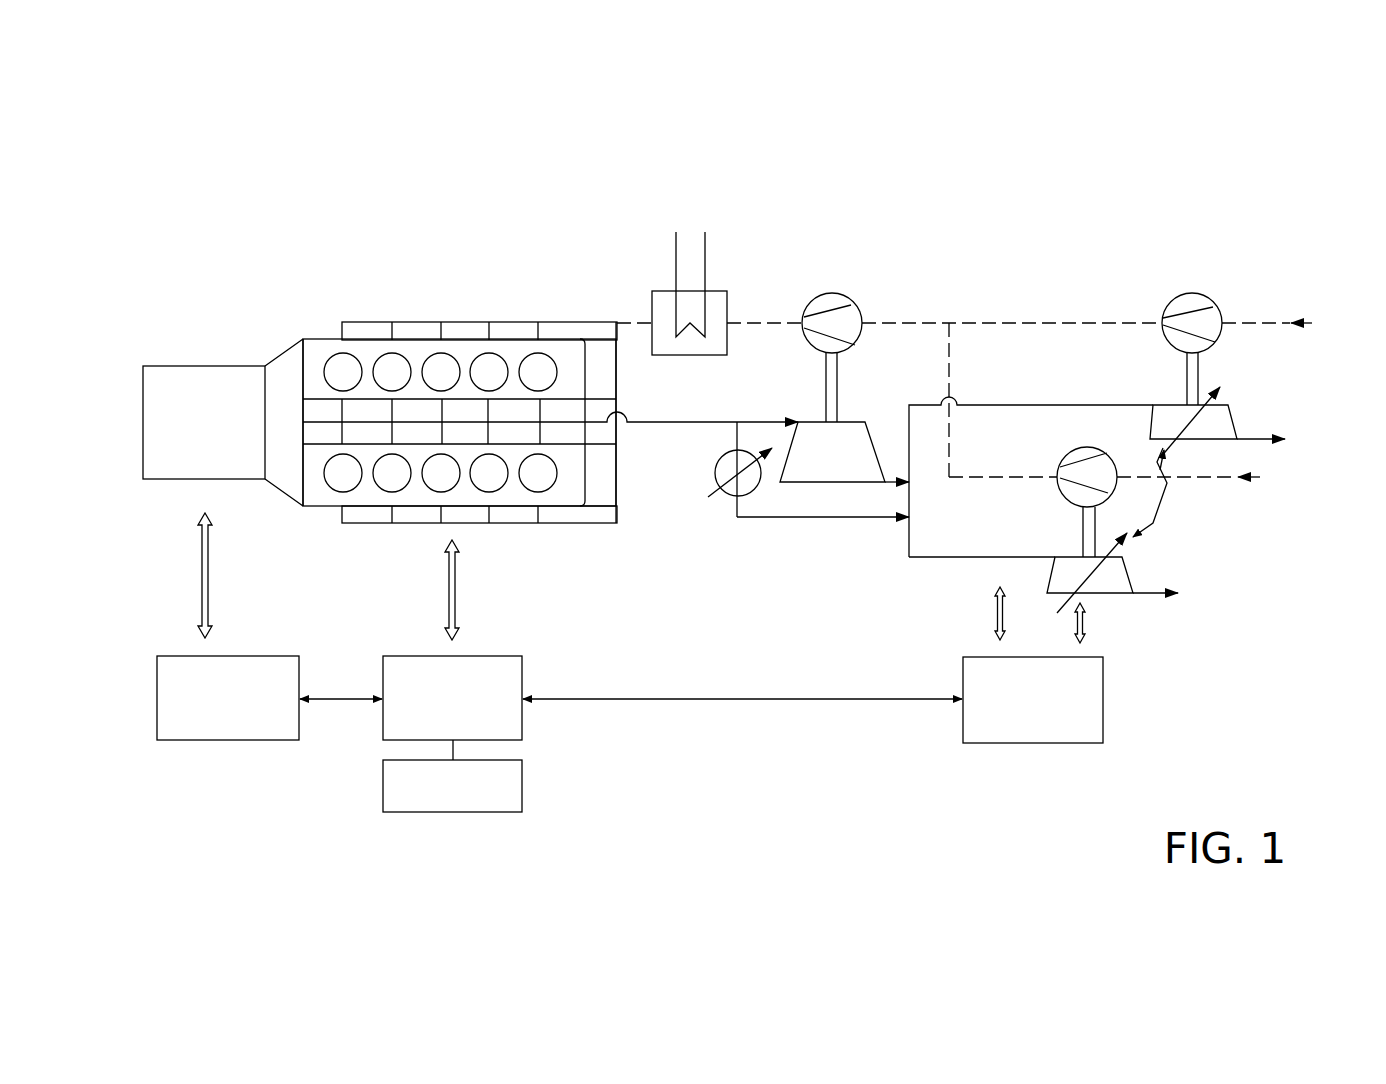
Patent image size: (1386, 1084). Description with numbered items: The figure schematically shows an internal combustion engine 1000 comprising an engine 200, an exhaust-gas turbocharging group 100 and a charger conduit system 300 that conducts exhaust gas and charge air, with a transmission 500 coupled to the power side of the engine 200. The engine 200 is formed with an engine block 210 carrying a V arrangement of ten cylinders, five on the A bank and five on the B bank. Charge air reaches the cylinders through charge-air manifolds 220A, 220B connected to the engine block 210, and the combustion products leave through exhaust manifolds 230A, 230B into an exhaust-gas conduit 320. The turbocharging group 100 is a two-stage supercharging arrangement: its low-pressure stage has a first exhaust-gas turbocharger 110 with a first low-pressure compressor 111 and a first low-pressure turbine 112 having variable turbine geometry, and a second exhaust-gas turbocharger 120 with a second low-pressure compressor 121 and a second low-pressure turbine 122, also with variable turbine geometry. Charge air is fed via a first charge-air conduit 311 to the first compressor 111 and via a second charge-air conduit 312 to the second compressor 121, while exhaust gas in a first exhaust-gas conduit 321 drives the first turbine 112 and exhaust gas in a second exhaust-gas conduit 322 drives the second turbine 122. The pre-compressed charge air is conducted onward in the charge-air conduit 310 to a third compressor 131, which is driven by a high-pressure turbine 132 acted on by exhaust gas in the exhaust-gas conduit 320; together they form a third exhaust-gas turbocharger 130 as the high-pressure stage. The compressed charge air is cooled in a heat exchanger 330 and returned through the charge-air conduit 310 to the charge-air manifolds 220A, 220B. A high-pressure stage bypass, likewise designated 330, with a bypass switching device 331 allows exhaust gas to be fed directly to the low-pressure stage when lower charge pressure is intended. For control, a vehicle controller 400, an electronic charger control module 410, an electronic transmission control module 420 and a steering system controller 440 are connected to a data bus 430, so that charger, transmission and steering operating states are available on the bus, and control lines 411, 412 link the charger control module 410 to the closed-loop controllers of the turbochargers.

The internal combustion engine 1000 is at (1230, 185).
The exhaust-gas turbocharging group 100 is at (1150, 424).
The first exhaust-gas turbocharger 110 is at (1222, 335).
The first low-pressure compressor 111 is at (1178, 298).
The first low-pressure turbine 112 is at (1155, 405).
The second exhaust-gas turbocharger 120 is at (1109, 539).
The second low-pressure compressor 121 is at (1060, 463).
The second low-pressure turbine 122 is at (1063, 573).
The third exhaust-gas turbocharger 130 is at (813, 357).
The third compressor 131 is at (840, 293).
The high-pressure turbine 132 is at (807, 418).
The engine 200 is at (510, 272).
The engine block 210 is at (325, 335).
The charge-air manifold 220A is at (423, 322).
The charge-air manifold 220B is at (400, 523).
The exhaust manifold 230A is at (540, 408).
The exhaust manifold 230B is at (540, 436).
The charger conduit system 300 is at (982, 290).
The charge-air conduit 310 is at (563, 318).
The first charge-air conduit 311 is at (1060, 330).
The second charge-air conduit 312 is at (950, 377).
The exhaust-gas conduit 320 is at (668, 432).
The first exhaust-gas conduit 321 is at (940, 402).
The second exhaust-gas conduit 322 is at (693, 428).
The heat exchanger / high-pressure stage bypass 330 is at (727, 291).
The bypass switching device 331 is at (762, 480).
The vehicle controller 400 is at (505, 650).
The electronic charger control module 410 is at (1050, 744).
The control line 411 is at (995, 606).
The control line 412 is at (1085, 620).
The electronic transmission control module 420 is at (218, 741).
The data bus 430 is at (340, 702).
The steering system controller 440 is at (383, 797).
The transmission 500 is at (143, 382).